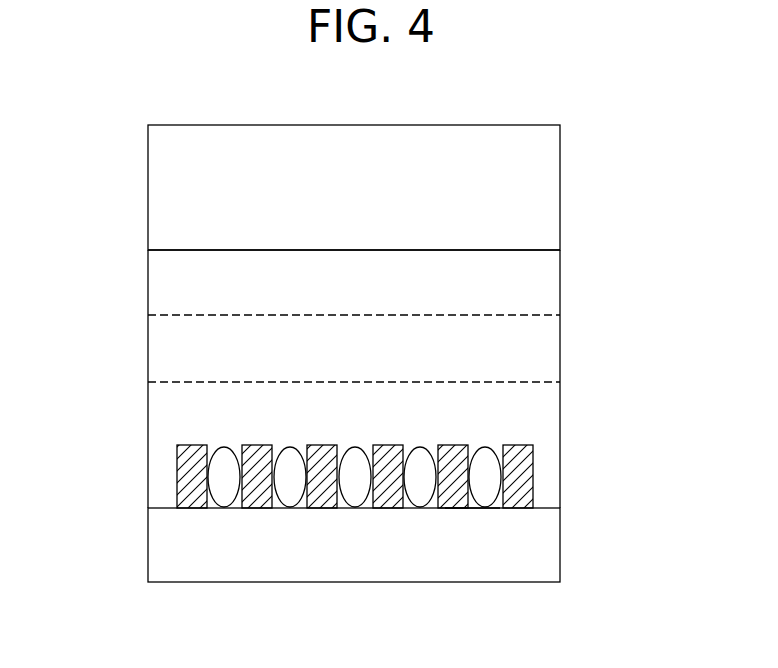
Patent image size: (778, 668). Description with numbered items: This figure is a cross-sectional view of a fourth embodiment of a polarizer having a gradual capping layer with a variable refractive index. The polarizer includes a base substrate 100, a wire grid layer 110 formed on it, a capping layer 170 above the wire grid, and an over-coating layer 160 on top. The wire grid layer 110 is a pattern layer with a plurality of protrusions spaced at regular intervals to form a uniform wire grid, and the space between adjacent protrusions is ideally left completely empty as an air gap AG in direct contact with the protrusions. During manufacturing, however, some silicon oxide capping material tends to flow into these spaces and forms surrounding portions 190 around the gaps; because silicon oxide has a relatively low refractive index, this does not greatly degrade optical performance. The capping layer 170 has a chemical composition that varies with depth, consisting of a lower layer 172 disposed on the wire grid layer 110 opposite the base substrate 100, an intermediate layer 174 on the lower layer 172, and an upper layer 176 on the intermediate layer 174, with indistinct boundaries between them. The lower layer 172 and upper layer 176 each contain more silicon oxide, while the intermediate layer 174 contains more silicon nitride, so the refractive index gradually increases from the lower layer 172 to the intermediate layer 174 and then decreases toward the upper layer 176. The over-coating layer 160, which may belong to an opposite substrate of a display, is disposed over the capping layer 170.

The base substrate 100 is at (556, 547).
The wire grid layer 110 is at (533, 490).
The air gap AG is at (492, 464).
The surrounding portion 190 is at (470, 508).
The over-coating layer 160 is at (560, 194).
The capping layer 170 is at (368, 379).
The lower layer 172 is at (320, 445).
The intermediate layer 174 is at (148, 348).
The upper layer 176 is at (148, 281).